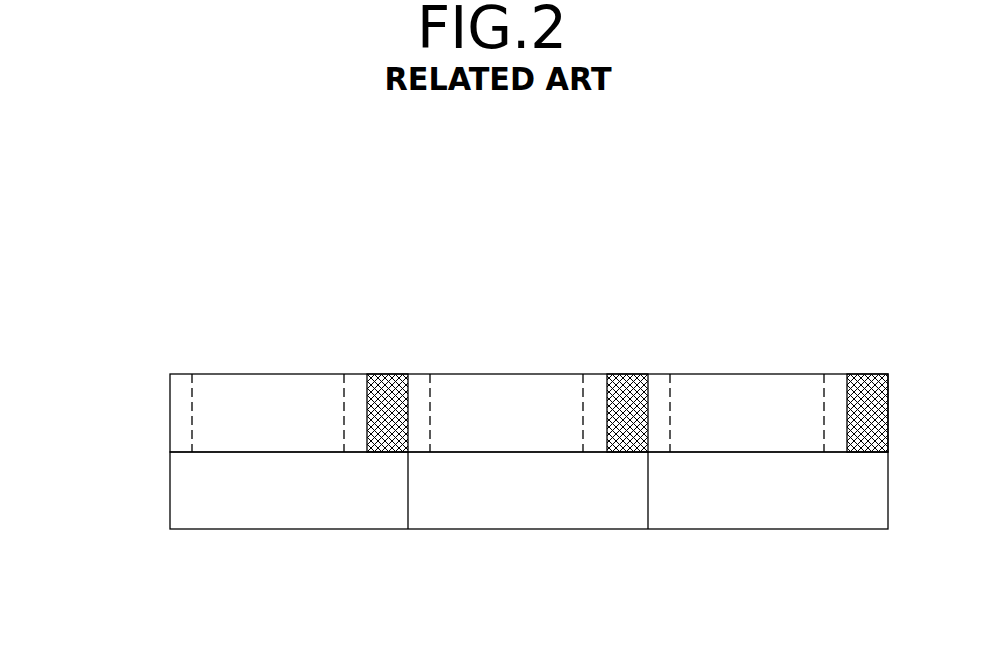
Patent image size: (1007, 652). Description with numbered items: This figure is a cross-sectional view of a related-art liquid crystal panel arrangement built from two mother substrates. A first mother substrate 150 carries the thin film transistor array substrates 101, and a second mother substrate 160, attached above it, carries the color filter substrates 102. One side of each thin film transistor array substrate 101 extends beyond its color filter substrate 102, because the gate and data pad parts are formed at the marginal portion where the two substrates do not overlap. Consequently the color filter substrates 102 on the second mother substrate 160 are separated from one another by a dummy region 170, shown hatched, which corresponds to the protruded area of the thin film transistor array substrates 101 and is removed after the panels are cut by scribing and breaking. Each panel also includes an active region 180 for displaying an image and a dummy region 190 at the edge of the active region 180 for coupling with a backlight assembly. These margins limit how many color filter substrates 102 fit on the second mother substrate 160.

The thin film transistor array substrate 101 is at (337, 505).
The color filter substrate 102 is at (260, 423).
The first mother substrate 150 is at (144, 487).
The second mother substrate 160 is at (144, 413).
The dummy region 170 is at (383, 374).
The active region 180 is at (343, 372).
The dummy region 190 is at (186, 374).